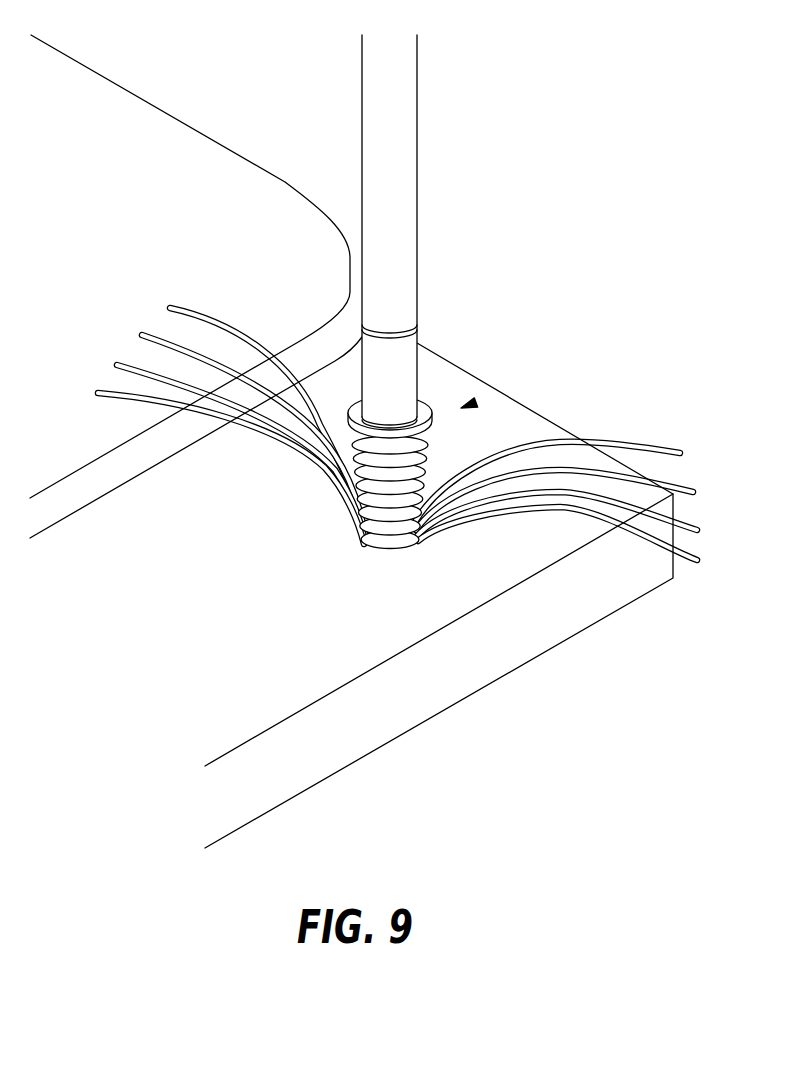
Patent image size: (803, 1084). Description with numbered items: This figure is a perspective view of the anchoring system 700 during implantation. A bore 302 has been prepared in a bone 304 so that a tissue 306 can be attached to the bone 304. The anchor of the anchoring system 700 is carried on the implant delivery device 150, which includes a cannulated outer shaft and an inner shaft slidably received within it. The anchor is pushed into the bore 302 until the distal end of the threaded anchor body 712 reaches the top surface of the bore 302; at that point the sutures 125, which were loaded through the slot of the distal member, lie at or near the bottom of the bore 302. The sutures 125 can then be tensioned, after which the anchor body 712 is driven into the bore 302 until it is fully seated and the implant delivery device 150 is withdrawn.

The sutures 125 is at (622, 443).
The implant delivery device 150 is at (409, 198).
The bore 302 is at (380, 548).
The bone 304 is at (443, 378).
The tissue 306 is at (222, 163).
The anchoring system 700 is at (476, 402).
The anchor body 712 is at (428, 443).